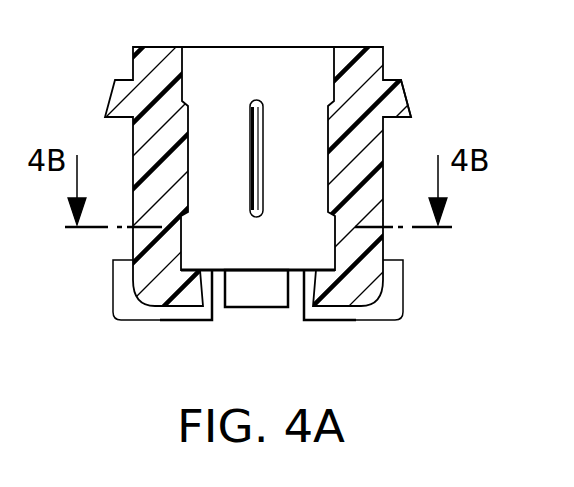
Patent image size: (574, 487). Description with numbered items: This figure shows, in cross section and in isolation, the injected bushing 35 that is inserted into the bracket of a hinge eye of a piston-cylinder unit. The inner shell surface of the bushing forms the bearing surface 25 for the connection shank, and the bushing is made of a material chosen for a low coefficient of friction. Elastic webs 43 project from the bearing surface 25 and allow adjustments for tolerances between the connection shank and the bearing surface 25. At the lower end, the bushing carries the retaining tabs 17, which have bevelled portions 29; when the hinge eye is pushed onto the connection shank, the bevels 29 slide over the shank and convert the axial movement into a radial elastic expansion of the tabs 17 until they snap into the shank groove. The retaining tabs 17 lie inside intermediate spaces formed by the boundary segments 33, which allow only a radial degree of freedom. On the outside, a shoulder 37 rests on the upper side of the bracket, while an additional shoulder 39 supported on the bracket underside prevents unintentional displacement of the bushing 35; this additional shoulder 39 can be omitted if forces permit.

The bushing 35 is at (287, 243).
The bearing surface 25 is at (330, 80).
The elastic webs 43 is at (251, 122).
The additional shoulder 39 is at (395, 114).
The shoulder 37 is at (393, 262).
The boundary segments 33 is at (127, 312).
The bevelled portions 29 is at (313, 287).
The retaining tabs 17 is at (191, 301).